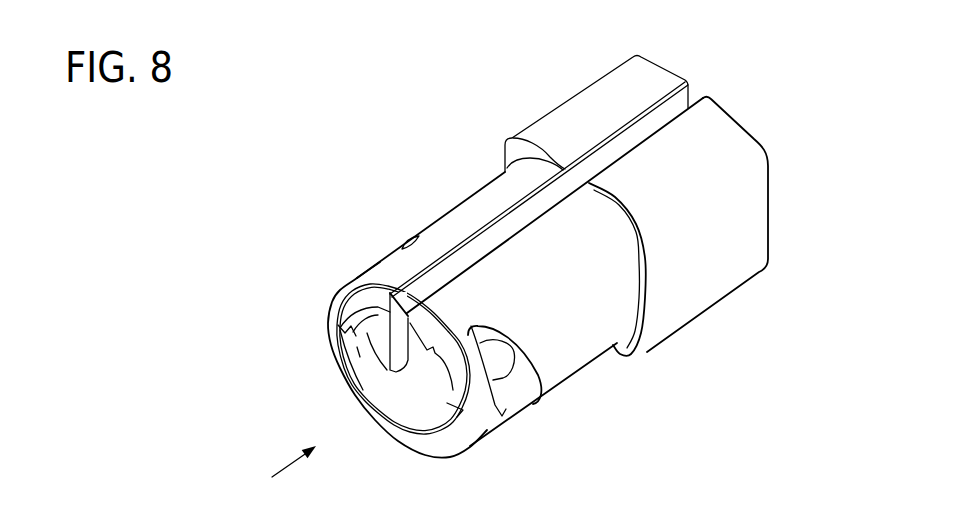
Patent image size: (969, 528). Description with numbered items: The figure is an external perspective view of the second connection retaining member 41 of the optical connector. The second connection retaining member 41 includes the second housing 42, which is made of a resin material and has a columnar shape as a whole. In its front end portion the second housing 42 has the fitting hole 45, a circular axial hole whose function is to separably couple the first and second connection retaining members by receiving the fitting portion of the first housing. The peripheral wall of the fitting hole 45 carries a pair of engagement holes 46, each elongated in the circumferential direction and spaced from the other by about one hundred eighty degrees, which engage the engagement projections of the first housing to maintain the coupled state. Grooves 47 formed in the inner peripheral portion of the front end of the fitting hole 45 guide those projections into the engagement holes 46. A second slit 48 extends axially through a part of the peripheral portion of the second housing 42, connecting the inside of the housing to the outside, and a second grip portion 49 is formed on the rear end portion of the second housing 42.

The second connection retaining member 41 is at (424, 140).
The second housing 42 is at (740, 217).
The fitting hole 45 is at (417, 392).
The engagement holes 46 is at (522, 392).
The grooves 47 is at (355, 363).
The second slit 48 is at (603, 158).
The second grip portion 49 is at (637, 62).